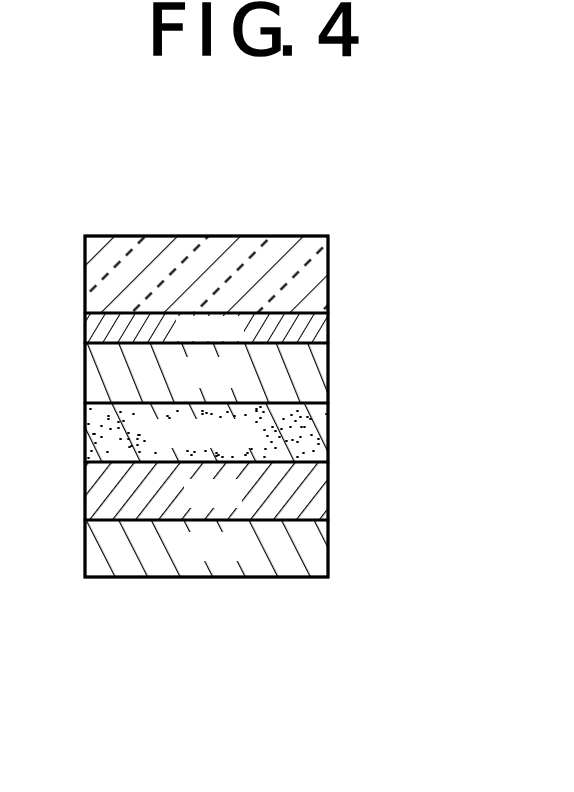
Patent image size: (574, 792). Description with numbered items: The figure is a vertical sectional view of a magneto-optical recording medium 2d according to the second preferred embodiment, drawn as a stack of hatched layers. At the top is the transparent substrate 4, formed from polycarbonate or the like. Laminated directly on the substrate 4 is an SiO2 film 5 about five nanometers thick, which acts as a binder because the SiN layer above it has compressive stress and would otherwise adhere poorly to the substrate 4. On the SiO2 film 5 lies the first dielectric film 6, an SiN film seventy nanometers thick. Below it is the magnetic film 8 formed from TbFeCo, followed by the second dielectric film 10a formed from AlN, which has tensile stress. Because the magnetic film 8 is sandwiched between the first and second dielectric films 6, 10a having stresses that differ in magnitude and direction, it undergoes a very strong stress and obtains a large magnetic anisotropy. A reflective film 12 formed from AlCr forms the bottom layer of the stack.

The magneto-optical recording medium 2d is at (253, 389).
The transparent substrate 4 is at (313, 239).
The SiO2 film 5 is at (328, 327).
The first dielectric film 6 is at (317, 378).
The magnetic film 8 is at (326, 437).
The second dielectric film 10a is at (327, 487).
The reflective film 12 is at (323, 577).